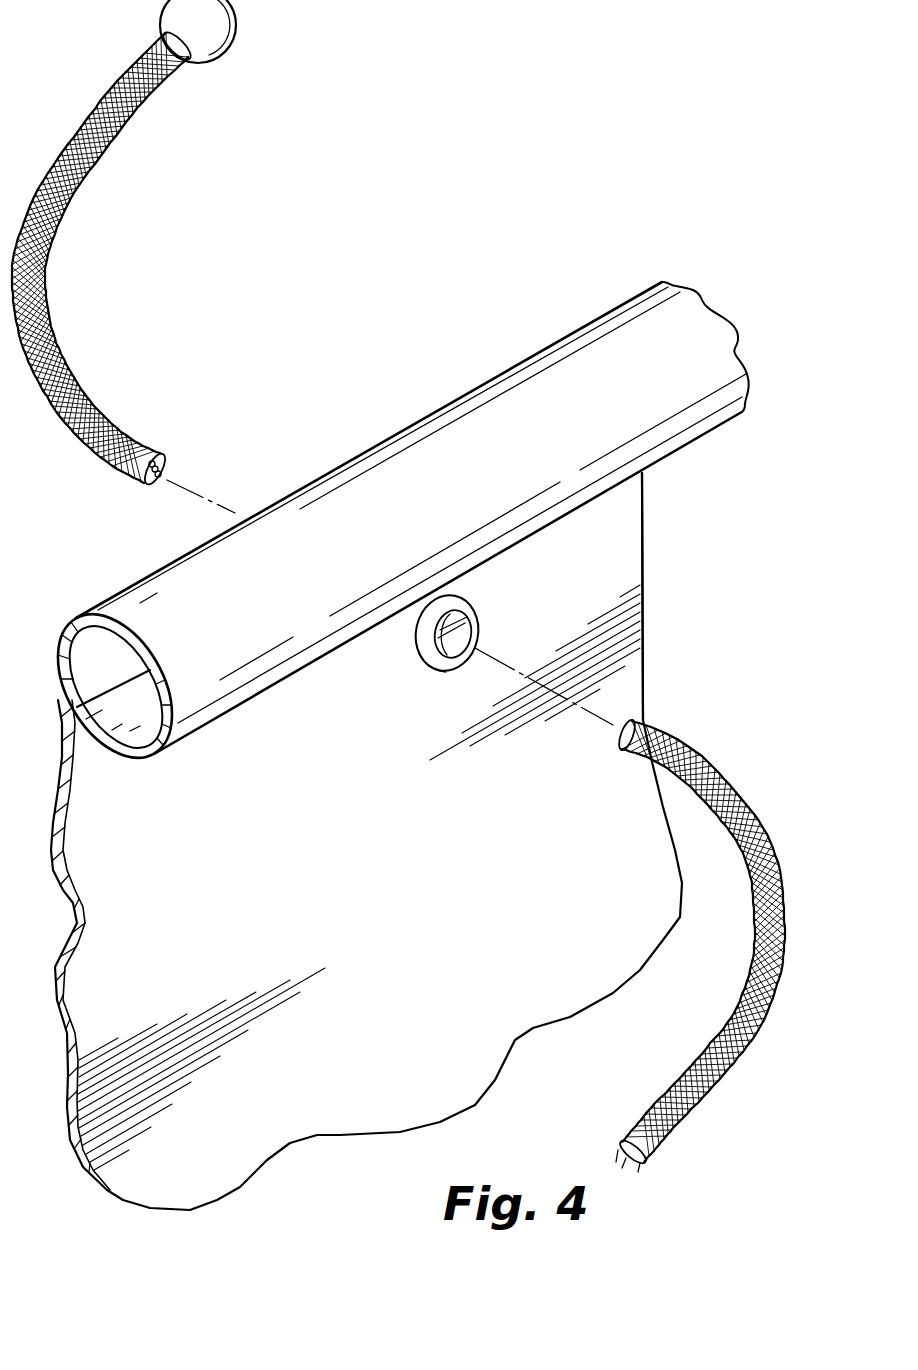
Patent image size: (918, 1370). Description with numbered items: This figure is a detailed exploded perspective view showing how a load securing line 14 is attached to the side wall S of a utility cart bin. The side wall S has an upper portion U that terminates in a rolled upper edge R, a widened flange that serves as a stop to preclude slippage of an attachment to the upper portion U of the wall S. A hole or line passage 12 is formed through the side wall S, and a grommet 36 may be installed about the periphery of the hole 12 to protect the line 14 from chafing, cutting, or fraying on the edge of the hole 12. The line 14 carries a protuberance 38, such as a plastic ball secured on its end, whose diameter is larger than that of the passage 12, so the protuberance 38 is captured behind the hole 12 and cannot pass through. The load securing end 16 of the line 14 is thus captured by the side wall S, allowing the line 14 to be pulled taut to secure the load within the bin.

The hole or line passage 12 is at (478, 624).
The line 14 is at (692, 752).
The load securing end 16 is at (42, 292).
The grommet 36 is at (412, 652).
The protuberance 38 is at (217, 32).
The rolled upper edge R is at (483, 383).
The side wall S is at (381, 894).
The upper portion U is at (619, 540).